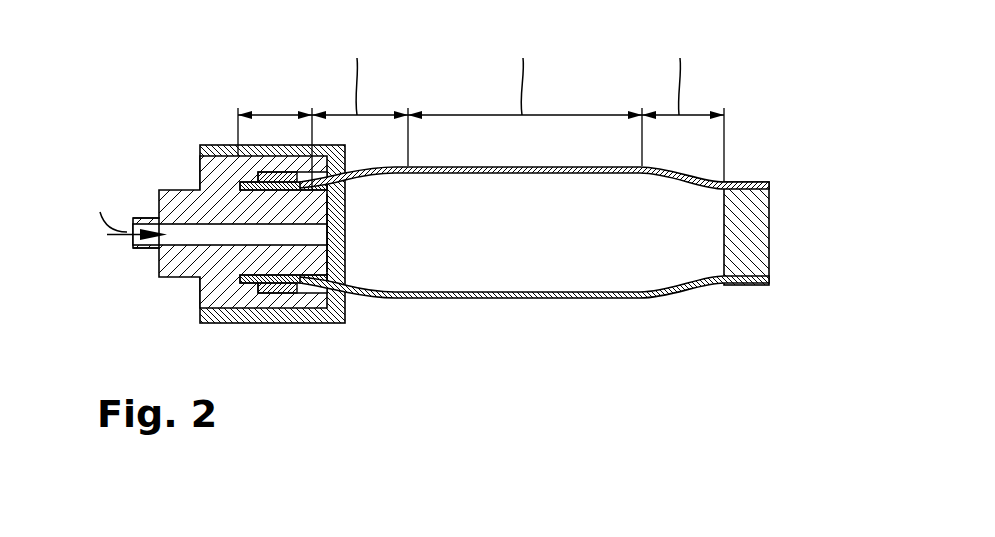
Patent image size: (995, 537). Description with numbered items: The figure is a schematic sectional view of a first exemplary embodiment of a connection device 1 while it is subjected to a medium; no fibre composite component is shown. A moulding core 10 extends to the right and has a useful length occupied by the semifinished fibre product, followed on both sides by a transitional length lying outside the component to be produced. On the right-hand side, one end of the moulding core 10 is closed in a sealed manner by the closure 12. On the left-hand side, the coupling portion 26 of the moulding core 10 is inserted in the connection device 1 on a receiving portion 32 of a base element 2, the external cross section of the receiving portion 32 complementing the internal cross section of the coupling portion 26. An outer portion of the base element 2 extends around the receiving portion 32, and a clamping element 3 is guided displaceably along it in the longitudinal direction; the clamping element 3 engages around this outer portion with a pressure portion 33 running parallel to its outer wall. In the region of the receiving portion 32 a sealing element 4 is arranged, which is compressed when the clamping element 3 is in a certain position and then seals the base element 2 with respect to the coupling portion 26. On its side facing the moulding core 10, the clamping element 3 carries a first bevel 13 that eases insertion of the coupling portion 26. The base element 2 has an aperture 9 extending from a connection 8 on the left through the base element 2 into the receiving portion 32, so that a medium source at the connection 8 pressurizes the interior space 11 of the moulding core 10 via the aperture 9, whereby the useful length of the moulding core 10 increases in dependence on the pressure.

The connection device 1 is at (282, 393).
The base element 2 is at (184, 198).
The clamping element 3 is at (211, 152).
The sealing element 4 is at (277, 297).
The connection 8 is at (148, 248).
The aperture 9 is at (187, 233).
The moulding core 10 is at (568, 299).
The interior space 11 is at (670, 263).
The closure 12 is at (752, 235).
The first bevel 13 is at (362, 293).
The coupling portion 26 is at (271, 115).
The receiving portion 32 is at (327, 257).
The pressure portion 33 is at (300, 292).